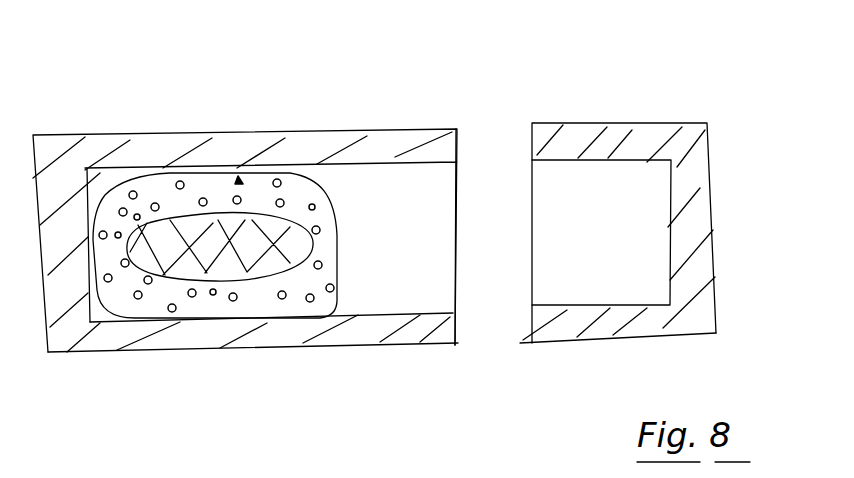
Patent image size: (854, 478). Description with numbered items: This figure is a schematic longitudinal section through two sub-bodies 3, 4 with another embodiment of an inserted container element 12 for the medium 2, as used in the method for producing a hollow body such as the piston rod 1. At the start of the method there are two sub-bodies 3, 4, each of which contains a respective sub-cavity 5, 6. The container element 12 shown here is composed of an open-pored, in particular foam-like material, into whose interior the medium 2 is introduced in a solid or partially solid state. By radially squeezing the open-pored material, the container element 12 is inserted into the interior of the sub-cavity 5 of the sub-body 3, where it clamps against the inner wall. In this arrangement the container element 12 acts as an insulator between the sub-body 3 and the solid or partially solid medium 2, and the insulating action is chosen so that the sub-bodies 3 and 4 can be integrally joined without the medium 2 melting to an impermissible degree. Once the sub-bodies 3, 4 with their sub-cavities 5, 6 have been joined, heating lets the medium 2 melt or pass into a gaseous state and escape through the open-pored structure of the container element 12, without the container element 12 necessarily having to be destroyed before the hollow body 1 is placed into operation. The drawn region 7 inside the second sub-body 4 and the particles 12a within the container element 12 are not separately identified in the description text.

The piston rod 1 is at (264, 242).
The medium 2 is at (213, 245).
The sub-body 3 is at (442, 217).
The sub-body 4 is at (618, 245).
The sub-cavity 5 is at (375, 293).
The sub-cavity 6 is at (588, 288).
The cavity of cover 7 is at (562, 208).
The container element 12 is at (230, 178).
The filler particles 12a is at (175, 217).